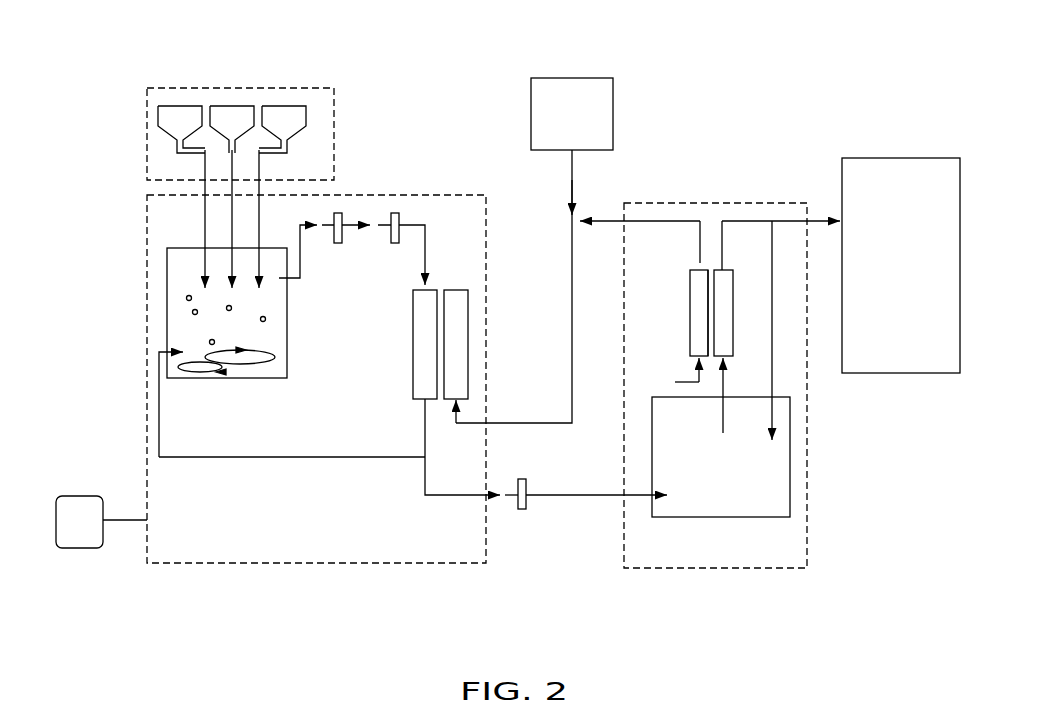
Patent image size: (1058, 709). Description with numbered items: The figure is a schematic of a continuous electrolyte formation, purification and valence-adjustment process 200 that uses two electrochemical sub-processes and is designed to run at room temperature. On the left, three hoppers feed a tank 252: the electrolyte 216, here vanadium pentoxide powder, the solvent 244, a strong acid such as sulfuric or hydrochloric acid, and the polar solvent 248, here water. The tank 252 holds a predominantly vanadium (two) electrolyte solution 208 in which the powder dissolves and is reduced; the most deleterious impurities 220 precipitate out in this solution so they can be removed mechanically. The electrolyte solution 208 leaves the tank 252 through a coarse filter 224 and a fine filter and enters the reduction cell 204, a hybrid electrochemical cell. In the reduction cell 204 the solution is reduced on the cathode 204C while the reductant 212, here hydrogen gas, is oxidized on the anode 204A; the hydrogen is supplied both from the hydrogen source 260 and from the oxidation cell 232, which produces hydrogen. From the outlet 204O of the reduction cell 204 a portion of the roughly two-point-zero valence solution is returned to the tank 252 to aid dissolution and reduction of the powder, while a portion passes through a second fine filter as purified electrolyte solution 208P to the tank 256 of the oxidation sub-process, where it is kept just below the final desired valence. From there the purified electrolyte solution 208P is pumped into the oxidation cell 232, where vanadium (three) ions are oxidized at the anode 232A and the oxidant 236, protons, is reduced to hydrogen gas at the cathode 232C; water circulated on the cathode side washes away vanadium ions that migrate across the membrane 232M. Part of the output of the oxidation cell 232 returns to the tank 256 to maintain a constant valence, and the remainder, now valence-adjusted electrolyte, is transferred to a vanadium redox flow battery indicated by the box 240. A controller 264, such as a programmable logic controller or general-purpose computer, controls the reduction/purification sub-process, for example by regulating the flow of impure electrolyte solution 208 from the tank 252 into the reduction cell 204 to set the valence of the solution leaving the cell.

The purification process 200 is at (792, 72).
The electrolyte 216 is at (168, 100).
The solvent 244 is at (231, 100).
The polar solvent 248 is at (283, 100).
The tank 252 is at (167, 257).
The impurities 220 is at (210, 342).
The electrolyte solution 208 is at (178, 288).
The coarse filter 224 is at (340, 212).
The reduction cell 204 is at (488, 259).
The cathode 204C is at (434, 288).
The anode 204A is at (469, 318).
The outlet 204O is at (432, 402).
The purified electrolyte solution 208P is at (568, 493).
The reductant 212 is at (555, 422).
The H2 source 260 is at (613, 113).
The oxidation cell 232 is at (660, 292).
The cathode 232C is at (694, 266).
The membrane 232M is at (710, 267).
The anode 232A is at (721, 267).
The oxidant 236 is at (690, 384).
The tank 256 is at (792, 480).
The VRFB 240 is at (898, 158).
The controller 264 is at (78, 548).